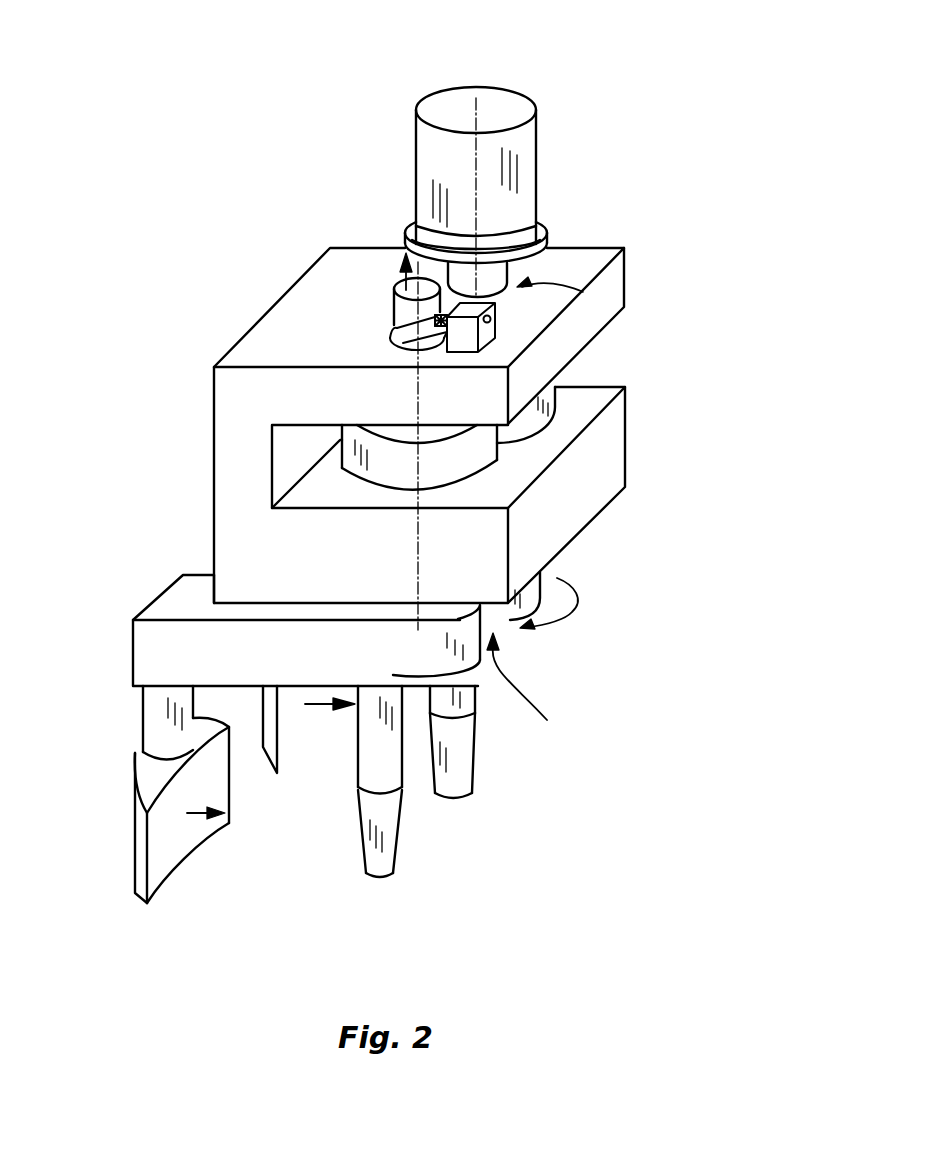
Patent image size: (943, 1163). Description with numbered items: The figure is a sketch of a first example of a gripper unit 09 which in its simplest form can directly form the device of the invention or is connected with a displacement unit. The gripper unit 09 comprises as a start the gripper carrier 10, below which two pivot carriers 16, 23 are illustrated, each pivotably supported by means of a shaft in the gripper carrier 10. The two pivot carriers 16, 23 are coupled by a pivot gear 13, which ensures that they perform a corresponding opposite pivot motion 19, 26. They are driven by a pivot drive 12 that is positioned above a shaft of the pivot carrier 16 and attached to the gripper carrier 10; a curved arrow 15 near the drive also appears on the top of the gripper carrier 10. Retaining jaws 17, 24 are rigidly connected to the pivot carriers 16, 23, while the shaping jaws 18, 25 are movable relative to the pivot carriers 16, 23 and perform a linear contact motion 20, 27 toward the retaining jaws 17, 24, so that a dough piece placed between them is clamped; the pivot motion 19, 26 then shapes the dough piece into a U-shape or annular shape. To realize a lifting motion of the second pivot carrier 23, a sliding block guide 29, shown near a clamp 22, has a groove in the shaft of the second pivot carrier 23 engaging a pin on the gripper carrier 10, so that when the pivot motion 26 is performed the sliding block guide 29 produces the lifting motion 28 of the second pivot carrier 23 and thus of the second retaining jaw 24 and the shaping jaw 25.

The gripper unit 09 is at (170, 42).
The gripper carrier 10 is at (278, 548).
The pivot drive 12 is at (457, 168).
The pivot gear 13 is at (473, 453).
The rotation arrow of top plate 15 is at (583, 292).
The pivot carrier 16 is at (500, 612).
The retaining jaw 17 is at (460, 740).
The shaping jaw 18 is at (355, 695).
The pivot motion 19 is at (572, 612).
The contact motion 20 is at (297, 730).
The clamp 22 is at (378, 339).
The pivot carrier 23 is at (170, 652).
The retaining jaw 24 is at (387, 820).
The shaping jaw 25 is at (162, 845).
The pivot motion 26 is at (547, 720).
The contact motion 27 is at (205, 812).
The lifting motion 28 is at (400, 277).
The sliding block guide 29 is at (393, 312).